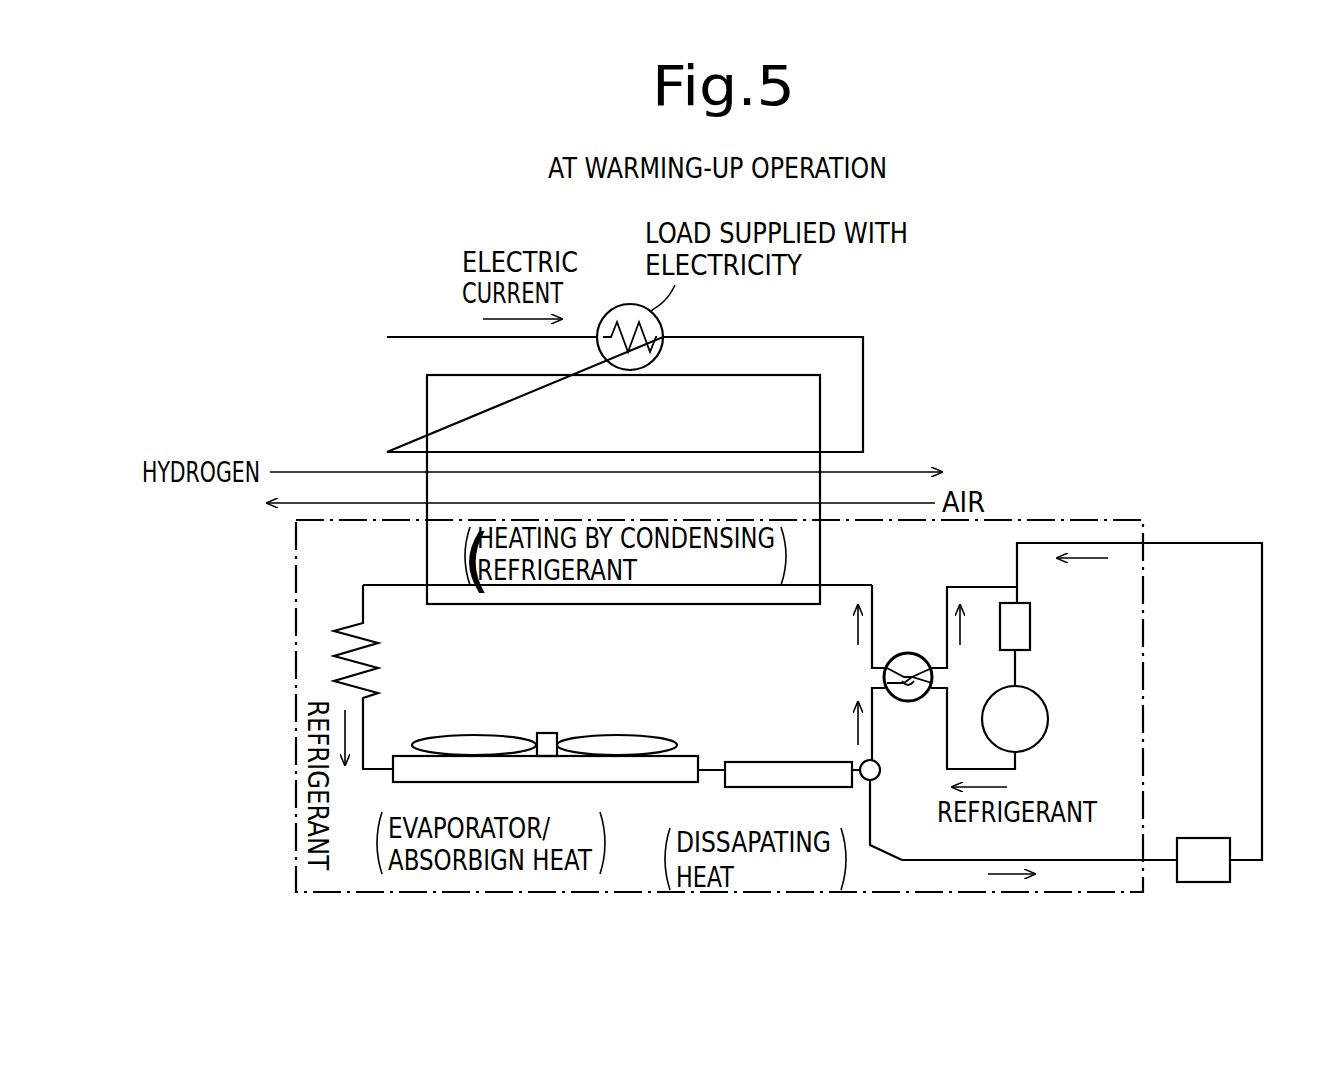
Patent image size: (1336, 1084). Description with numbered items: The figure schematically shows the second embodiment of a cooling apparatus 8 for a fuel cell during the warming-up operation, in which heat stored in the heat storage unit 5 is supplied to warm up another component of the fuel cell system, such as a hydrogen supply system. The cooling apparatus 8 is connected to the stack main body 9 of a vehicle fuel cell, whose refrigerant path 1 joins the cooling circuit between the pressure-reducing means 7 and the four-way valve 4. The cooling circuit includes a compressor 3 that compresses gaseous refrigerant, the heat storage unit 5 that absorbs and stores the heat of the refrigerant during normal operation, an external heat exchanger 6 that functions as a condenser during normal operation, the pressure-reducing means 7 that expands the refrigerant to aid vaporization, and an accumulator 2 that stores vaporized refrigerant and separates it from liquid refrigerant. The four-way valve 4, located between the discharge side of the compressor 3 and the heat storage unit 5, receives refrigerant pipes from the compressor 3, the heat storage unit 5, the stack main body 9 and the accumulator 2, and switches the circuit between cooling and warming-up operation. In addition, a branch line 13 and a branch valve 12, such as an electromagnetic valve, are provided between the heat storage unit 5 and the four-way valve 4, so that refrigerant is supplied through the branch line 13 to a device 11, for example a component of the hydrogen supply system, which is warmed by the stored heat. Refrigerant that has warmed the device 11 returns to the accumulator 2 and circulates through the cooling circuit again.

The refrigerant path 1 is at (465, 582).
The accumulator 2 is at (1030, 618).
The compressor 3 is at (1048, 717).
The four-way valve 4 is at (908, 702).
The heat storage unit 5 is at (773, 787).
The external heat exchanger 6 is at (503, 782).
The pressure-reducing means 7 is at (378, 661).
The cooling apparatus 8 is at (1068, 500).
The stack main body 9 is at (763, 408).
The device 11 is at (1208, 882).
The branch valve 12 is at (877, 780).
The branch line 13 is at (1097, 860).